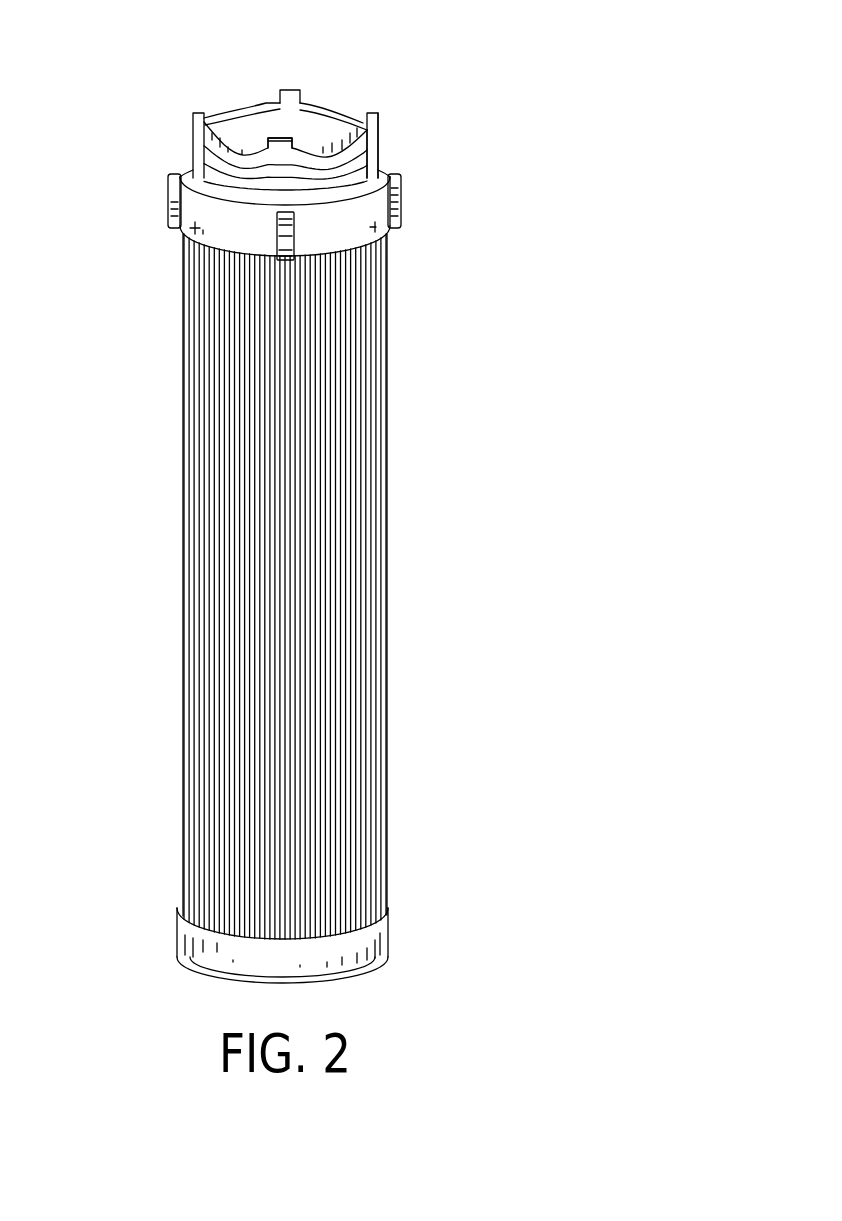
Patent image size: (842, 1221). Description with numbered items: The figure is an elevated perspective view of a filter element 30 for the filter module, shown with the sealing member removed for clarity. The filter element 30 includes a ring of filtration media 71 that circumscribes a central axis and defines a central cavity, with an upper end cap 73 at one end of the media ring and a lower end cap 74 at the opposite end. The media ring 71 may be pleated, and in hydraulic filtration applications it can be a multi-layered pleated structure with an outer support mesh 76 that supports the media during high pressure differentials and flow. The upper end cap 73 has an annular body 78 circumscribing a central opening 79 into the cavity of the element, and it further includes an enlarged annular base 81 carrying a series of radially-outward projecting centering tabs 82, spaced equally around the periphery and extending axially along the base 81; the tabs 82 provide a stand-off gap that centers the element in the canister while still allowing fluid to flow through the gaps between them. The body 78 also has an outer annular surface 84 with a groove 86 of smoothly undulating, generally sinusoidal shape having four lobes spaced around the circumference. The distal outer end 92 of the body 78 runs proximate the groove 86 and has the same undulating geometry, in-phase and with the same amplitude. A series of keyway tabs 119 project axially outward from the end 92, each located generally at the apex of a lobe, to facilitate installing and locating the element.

The filter element 30 is at (470, 505).
The ring of filtration media 71 is at (363, 372).
The upper end cap 73 is at (378, 238).
The lower end cap 74 is at (377, 943).
The outer support mesh 76 is at (369, 815).
The annular body 78 is at (182, 178).
The central opening 79 is at (242, 143).
The enlarged annular base 81 is at (197, 226).
The centering tabs 82 is at (167, 210).
The outer annular surface 84 is at (389, 178).
The groove 86 is at (378, 158).
The distal outer end 92 is at (258, 104).
The keyway tabs 119 is at (195, 115).